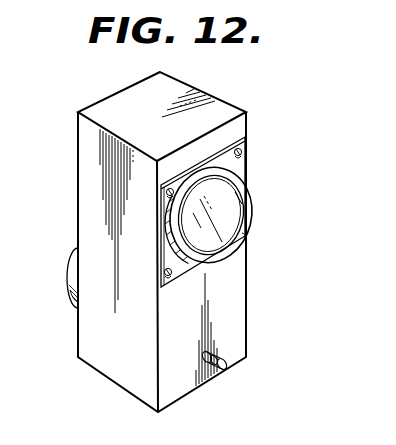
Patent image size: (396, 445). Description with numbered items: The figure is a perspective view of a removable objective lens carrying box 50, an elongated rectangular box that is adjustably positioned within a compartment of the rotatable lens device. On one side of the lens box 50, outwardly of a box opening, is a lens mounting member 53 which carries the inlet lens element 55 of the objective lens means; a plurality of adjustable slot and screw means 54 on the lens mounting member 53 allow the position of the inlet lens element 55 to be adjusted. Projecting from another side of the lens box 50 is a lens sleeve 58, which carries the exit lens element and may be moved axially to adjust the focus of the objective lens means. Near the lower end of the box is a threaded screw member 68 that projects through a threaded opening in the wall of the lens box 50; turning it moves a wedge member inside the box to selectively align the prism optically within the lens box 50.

The objective lens carrying box 50 is at (124, 242).
The lens mounting member 53 is at (243, 173).
The adjustable slot and screw means 54 is at (244, 148).
The inlet lens element 55 is at (224, 221).
The lens sleeve 58 is at (40, 278).
The threaded screw member 68 is at (218, 351).